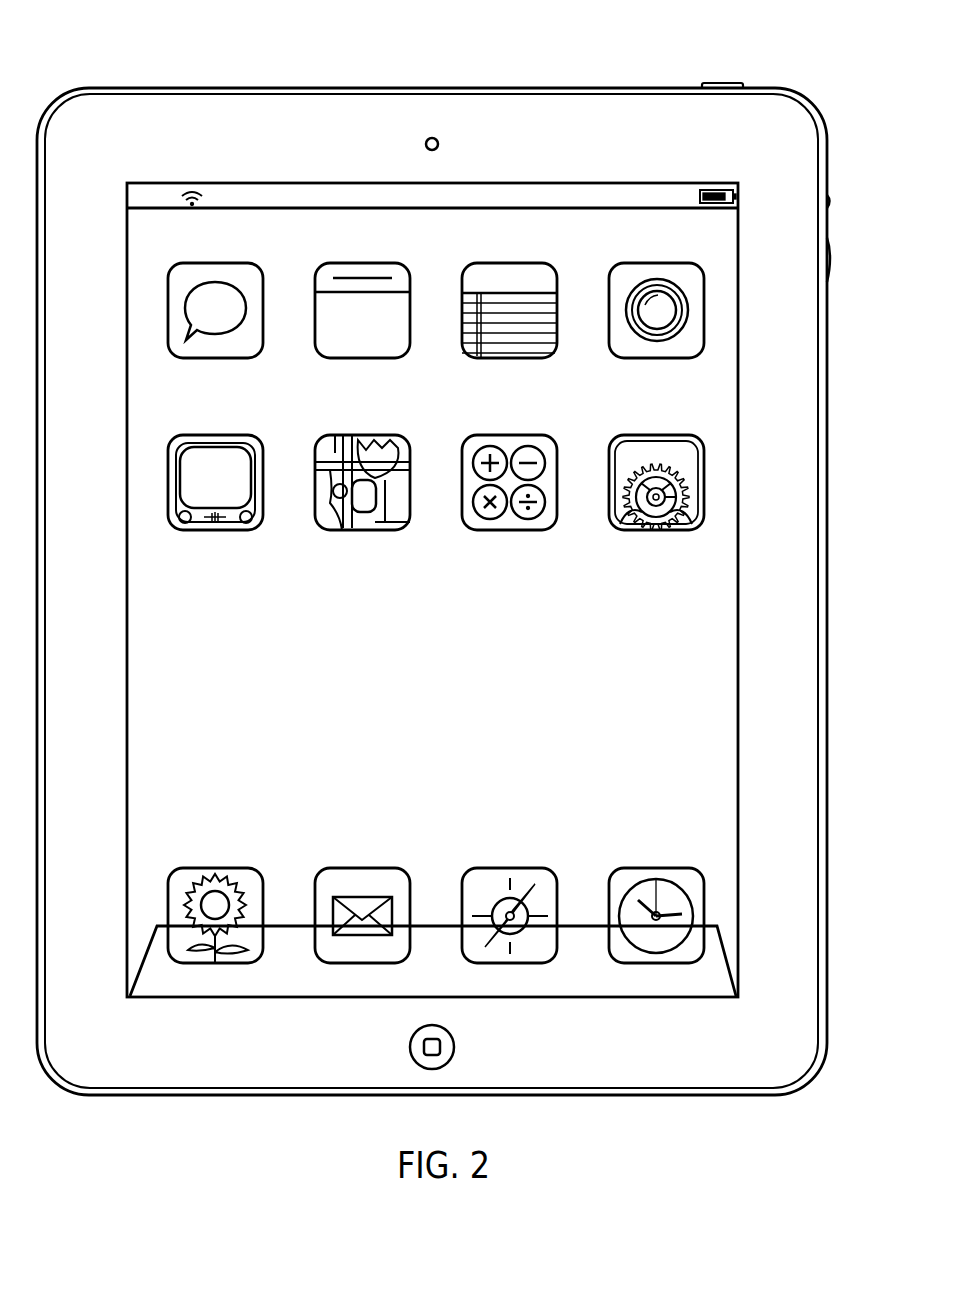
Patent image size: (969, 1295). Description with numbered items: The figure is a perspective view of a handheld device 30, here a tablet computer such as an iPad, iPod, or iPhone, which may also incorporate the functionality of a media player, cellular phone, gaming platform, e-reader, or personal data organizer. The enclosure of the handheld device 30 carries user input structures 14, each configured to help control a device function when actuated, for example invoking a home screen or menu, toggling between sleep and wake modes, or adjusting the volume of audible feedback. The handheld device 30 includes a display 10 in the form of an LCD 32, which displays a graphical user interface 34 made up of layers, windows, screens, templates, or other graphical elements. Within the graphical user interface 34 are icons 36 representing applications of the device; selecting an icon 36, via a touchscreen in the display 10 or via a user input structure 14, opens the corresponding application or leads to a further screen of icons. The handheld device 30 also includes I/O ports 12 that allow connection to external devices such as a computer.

The display 10 is at (711, 668).
The I/O port 12 is at (146, 87).
The user input structure 14 is at (727, 83).
The handheld device 30 is at (326, 36).
The LCD 32 is at (729, 612).
The graphical user interface 34 is at (182, 654).
The icon 36 is at (362, 264).